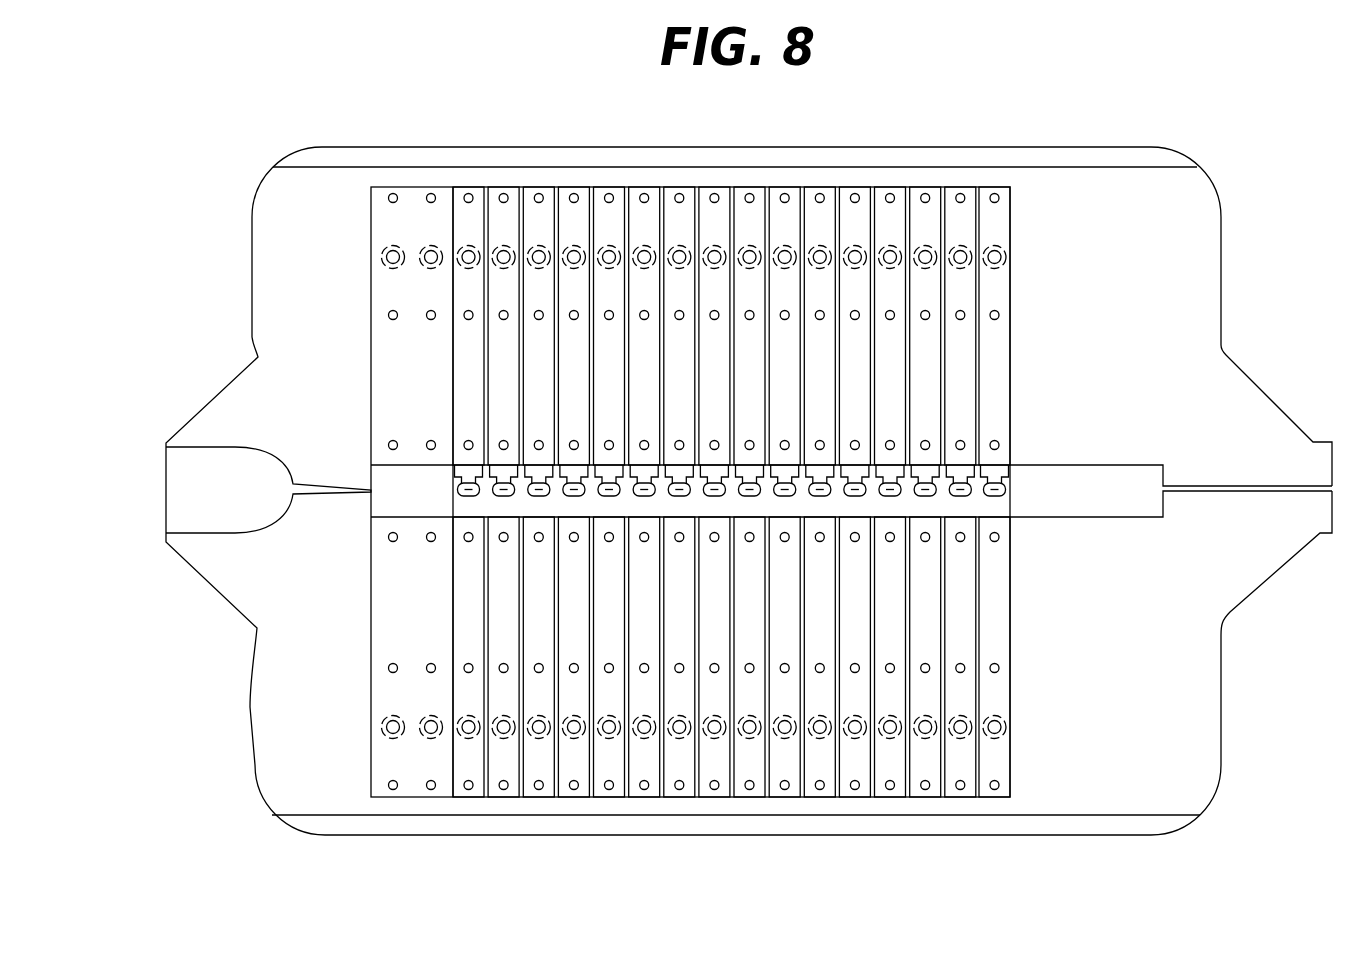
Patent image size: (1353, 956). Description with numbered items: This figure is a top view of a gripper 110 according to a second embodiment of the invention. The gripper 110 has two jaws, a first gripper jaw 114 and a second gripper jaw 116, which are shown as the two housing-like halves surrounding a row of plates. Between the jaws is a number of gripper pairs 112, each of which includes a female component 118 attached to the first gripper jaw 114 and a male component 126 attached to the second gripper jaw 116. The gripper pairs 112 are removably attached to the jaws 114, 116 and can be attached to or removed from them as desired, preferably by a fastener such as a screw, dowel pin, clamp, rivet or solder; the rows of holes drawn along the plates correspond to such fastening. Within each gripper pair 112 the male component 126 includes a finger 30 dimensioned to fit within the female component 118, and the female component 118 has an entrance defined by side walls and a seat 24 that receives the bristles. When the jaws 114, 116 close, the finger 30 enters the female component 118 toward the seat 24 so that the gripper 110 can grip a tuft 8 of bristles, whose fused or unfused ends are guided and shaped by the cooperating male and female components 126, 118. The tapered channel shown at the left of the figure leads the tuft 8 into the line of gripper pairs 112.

The gripper 110 is at (204, 252).
The second gripper jaw 116 is at (1187, 218).
The first gripper jaw 114 is at (1173, 771).
The gripper pair 112 is at (1010, 407).
The male component 126 is at (925, 213).
The female component 118 is at (712, 765).
The finger 30 is at (453, 473).
The seat 24 is at (458, 493).
The tuft 8 is at (502, 493).